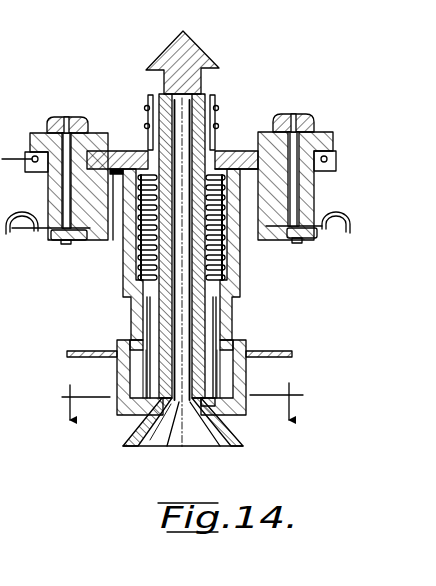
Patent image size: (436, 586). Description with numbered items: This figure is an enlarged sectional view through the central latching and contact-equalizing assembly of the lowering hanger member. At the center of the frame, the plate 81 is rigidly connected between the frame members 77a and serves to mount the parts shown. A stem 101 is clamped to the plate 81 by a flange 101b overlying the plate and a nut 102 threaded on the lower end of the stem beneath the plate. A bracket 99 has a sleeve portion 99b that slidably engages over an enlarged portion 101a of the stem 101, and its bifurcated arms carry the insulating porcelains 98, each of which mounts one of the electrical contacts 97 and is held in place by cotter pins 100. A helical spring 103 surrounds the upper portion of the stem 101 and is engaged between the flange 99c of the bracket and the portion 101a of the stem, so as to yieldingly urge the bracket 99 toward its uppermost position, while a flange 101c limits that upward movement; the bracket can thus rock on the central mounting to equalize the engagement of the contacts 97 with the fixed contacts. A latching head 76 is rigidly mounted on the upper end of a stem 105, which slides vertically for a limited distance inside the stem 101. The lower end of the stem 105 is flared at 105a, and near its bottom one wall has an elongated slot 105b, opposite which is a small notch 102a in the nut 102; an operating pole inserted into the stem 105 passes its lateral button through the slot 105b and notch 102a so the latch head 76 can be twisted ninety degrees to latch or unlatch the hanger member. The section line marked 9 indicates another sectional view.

The latching head 76 is at (197, 48).
The electrical contacts 97 is at (60, 116).
The insulating porcelain 98 is at (48, 188).
The bracket 99 is at (117, 151).
The sleeve portion 99b is at (125, 252).
The flange 99c is at (234, 150).
The cotter pins 100 is at (337, 158).
The stem 101 is at (206, 150).
The enlarged portion 101a is at (233, 321).
The flange 101b is at (128, 345).
The flange 101c is at (250, 148).
The nut 102 is at (117, 372).
The notch 102a is at (208, 404).
The helical spring 103 is at (223, 255).
The stem 105 is at (194, 345).
The flared lower end 105a is at (208, 425).
The elongated slot 105b is at (204, 414).
The plate 81 is at (293, 353).
The frame members 77a is at (13, 388).
The section line 9- 9 is at (182, 422).